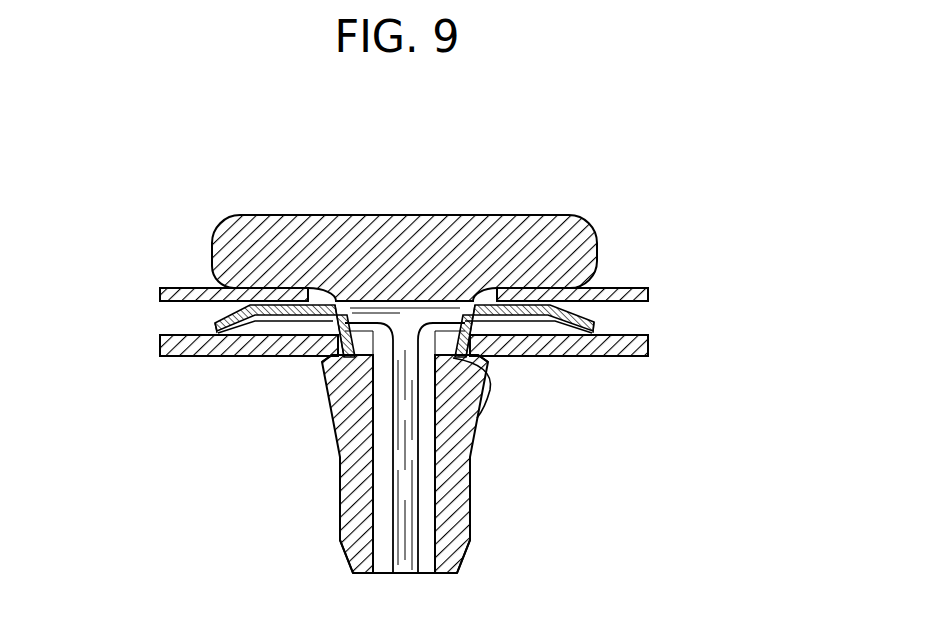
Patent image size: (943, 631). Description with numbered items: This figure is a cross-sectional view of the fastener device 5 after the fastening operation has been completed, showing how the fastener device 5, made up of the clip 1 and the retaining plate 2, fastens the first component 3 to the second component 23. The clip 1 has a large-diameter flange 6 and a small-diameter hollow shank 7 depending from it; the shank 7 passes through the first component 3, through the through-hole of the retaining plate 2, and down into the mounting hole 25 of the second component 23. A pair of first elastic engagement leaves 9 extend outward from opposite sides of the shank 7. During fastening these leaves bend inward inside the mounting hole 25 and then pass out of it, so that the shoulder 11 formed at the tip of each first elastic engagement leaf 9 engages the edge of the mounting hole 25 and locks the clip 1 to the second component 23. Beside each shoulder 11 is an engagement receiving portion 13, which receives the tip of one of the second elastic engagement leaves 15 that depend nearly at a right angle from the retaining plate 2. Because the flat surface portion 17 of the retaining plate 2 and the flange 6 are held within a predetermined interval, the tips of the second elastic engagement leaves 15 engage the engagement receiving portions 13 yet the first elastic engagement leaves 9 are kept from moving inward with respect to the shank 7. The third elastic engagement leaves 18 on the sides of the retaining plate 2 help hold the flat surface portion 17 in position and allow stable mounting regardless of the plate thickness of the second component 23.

The clip 1 is at (555, 455).
The retaining plate 2 is at (604, 319).
The first component 3 is at (176, 287).
The fastener device 5 is at (793, 290).
The flange 6 is at (238, 217).
The shank 7 is at (345, 523).
The first elastic engagement leaves 9 is at (346, 464).
The shoulder 11 is at (318, 368).
The engagement receiving portion 13 is at (400, 300).
The second elastic engagement leaves 15 is at (338, 305).
The flat surface portion 17 is at (321, 245).
The third elastic engagement leaves 18 is at (215, 323).
The second component 23 is at (190, 357).
The mounting hole 25 is at (477, 418).